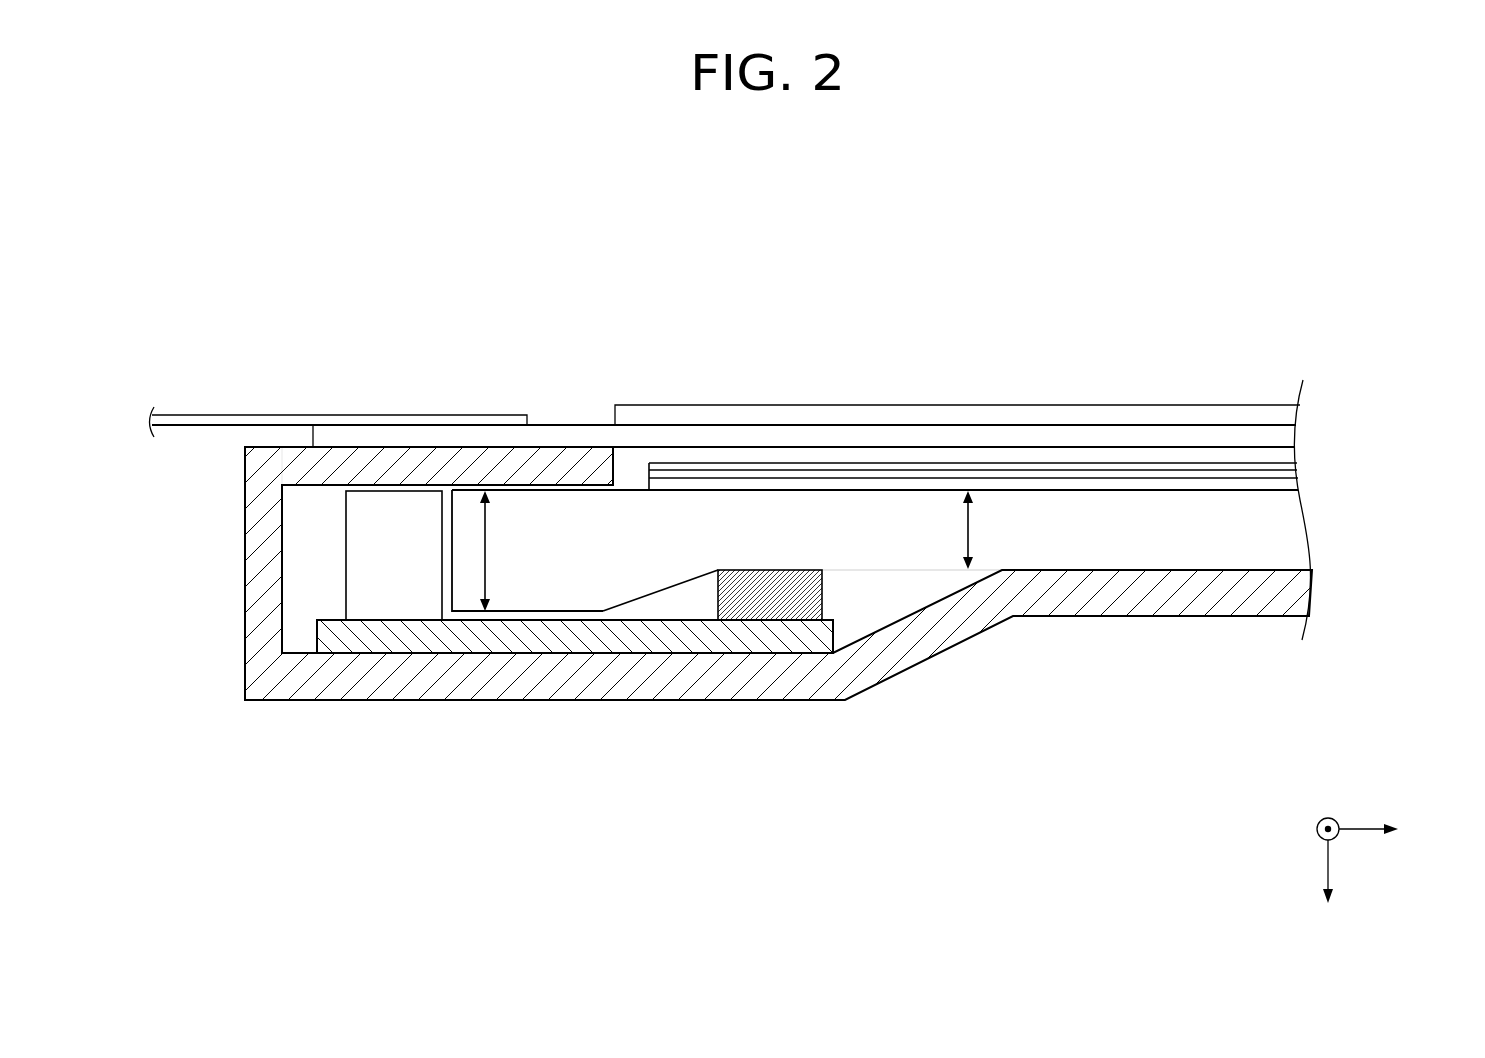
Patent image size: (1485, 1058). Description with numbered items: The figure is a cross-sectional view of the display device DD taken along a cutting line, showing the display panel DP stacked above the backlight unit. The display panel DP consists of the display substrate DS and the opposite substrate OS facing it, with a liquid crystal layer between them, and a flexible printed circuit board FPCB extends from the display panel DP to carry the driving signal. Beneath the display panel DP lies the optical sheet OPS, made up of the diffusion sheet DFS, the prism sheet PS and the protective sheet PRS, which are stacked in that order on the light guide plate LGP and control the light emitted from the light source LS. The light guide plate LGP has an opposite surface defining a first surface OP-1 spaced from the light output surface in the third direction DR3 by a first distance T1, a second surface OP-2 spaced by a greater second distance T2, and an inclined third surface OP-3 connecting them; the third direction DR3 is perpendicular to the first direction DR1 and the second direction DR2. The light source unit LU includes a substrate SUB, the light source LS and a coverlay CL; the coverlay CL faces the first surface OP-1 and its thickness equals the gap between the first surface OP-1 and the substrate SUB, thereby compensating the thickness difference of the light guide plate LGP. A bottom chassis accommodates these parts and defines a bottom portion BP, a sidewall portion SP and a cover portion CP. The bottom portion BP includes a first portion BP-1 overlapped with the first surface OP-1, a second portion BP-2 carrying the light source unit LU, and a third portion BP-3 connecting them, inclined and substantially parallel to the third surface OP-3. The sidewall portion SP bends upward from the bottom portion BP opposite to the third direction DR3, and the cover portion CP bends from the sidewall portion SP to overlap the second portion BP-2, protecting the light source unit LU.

The display device DD is at (1153, 299).
The display panel DP is at (698, 327).
The display substrate DS is at (578, 436).
The opposite substrate OS is at (669, 415).
The flexible printed circuit board FPCB is at (432, 420).
The cover portion CP is at (345, 465).
The sidewall portion SP is at (262, 551).
The bottom portion BP is at (1107, 775).
The first portion BP-1 is at (1078, 598).
The second portion BP-2 is at (735, 690).
The third portion BP-3 is at (912, 642).
The light source unit LU is at (593, 775).
The light source LS is at (397, 597).
The substrate SUB is at (458, 637).
The coverlay CL is at (713, 597).
The first surface OP-1 is at (908, 568).
The second surface OP-2 is at (551, 611).
The third surface OP-3 is at (660, 590).
The first distance T1 is at (979, 530).
The second distance T2 is at (472, 551).
The light guide plate LGP is at (1296, 531).
The optical sheet OPS is at (1400, 442).
The protective sheet PRS is at (1287, 466).
The prism sheet PS is at (1287, 475).
The diffusion sheet DFS is at (1287, 484).
The first direction DR1 is at (1391, 829).
The second direction DR2 is at (1327, 816).
The third direction DR3 is at (1327, 887).